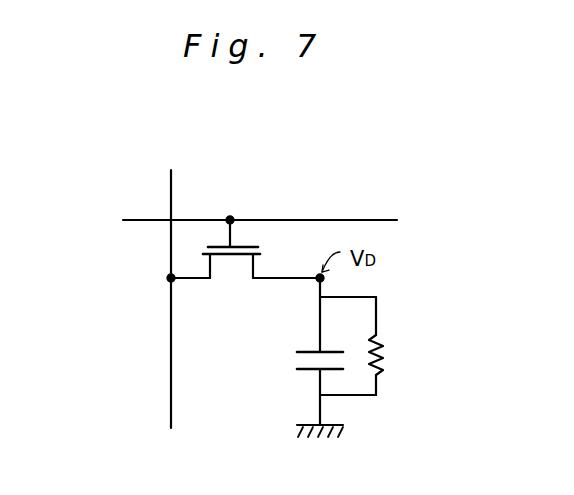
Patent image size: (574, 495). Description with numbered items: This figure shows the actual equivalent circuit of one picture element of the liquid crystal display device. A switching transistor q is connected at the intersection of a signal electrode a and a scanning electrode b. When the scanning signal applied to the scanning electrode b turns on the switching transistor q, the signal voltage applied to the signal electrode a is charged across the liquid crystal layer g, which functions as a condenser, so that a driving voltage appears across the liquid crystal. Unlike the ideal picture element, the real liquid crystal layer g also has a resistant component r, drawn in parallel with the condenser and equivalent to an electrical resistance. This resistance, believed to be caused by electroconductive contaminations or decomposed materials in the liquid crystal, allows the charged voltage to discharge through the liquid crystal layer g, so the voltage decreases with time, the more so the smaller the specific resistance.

The signal electrode a is at (170, 357).
The scanning electrode b is at (313, 220).
The switching transistor q is at (230, 262).
The liquid crystal layer g is at (308, 373).
The resistant component r is at (386, 370).